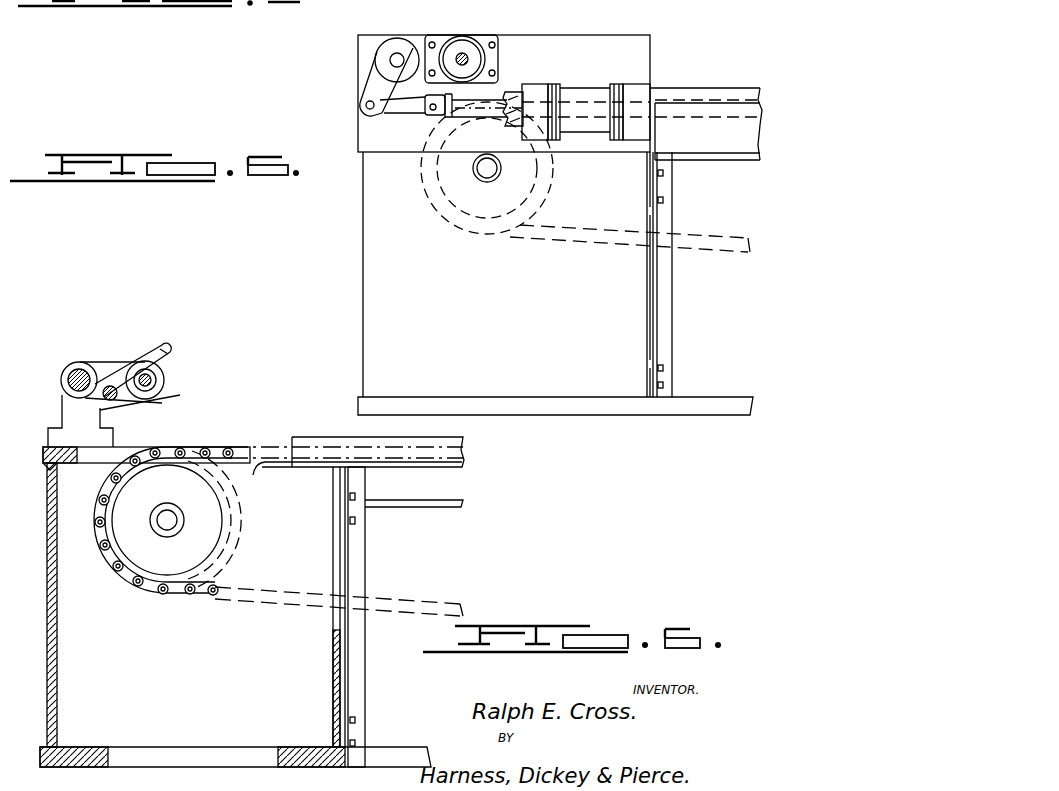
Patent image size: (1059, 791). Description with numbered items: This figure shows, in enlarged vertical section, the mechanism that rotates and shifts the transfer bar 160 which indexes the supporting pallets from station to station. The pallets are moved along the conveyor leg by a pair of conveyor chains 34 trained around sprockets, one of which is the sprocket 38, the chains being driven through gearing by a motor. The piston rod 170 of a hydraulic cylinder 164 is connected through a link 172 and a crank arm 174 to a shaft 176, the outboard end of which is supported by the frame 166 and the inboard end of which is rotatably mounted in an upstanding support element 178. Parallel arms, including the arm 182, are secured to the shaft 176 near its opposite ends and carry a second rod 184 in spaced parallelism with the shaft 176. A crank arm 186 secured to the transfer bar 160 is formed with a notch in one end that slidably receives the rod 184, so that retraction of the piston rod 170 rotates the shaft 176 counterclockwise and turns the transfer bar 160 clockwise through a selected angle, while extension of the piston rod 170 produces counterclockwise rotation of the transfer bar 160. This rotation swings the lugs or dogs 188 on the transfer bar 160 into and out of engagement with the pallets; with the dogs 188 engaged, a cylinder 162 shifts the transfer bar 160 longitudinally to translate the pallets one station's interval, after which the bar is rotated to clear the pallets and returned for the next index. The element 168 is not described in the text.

In FIG. 6, the conveyor chains 34 is at (227, 583).
In FIG. 6, the sprocket 38 is at (230, 517).
In FIG. 6, the transfer bar 160 is at (147, 378).
In FIG. 5, the cylinder 162 is at (455, 37).
In FIG. 5, the hydraulic cylinder 164 is at (640, 90).
In FIG. 5, the frame 166 is at (615, 44).
In FIG. 6, the roller shaft 168 is at (152, 382).
In FIG. 5, the piston rod 170 is at (455, 126).
In FIG. 5, the link 172 is at (393, 118).
In FIG. 5, the crank arm 174 is at (372, 85).
In FIG. 5, the shaft 176 is at (398, 58).
In FIG. 6, the shaft 176 is at (80, 378).
In FIG. 6, the upstanding support element 178 is at (62, 403).
In FIG. 6, the parallel arm 182 is at (97, 371).
In FIG. 6, the second rod 184 is at (103, 400).
In FIG. 6, the crank arm 186 is at (130, 405).
In FIG. 6, the lugs or dogs 188 is at (162, 346).